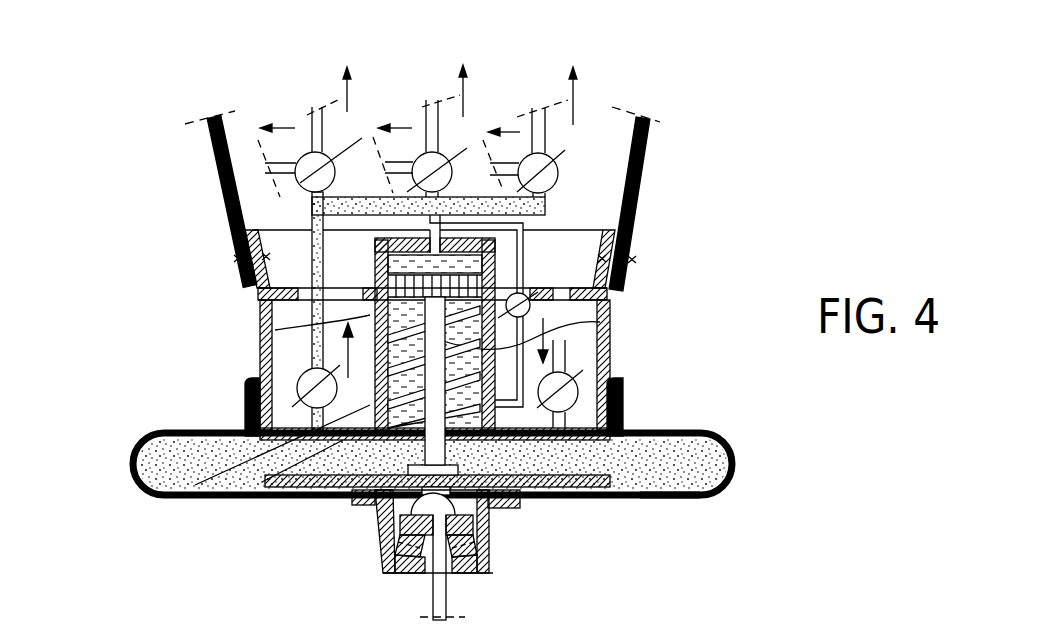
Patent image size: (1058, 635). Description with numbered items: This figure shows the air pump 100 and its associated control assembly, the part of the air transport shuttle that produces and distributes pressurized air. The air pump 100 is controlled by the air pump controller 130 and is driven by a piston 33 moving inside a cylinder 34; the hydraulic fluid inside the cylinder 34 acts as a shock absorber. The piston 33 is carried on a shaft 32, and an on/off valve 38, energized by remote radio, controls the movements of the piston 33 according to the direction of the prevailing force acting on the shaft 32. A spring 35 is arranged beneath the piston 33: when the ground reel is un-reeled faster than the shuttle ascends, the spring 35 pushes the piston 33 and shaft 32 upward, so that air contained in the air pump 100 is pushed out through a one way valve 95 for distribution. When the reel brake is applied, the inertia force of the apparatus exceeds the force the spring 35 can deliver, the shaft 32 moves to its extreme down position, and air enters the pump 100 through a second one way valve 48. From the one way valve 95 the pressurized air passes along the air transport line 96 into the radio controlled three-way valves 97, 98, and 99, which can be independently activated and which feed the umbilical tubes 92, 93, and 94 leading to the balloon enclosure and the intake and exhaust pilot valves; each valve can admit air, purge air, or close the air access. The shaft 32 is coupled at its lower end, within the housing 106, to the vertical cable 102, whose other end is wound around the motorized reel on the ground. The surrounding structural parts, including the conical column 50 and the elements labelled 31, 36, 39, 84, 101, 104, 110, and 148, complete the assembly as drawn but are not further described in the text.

The base plate 31 is at (312, 497).
The shaft 32 is at (237, 497).
The piston 33 is at (373, 305).
The cylinder 34 is at (543, 237).
The spring 35 is at (176, 495).
The lower housing 36 is at (610, 310).
The on/off valve 38 is at (612, 345).
The bypass tube 39 is at (523, 258).
The one way valve 48 is at (623, 398).
The conical column 50 is at (247, 405).
The side plates 84 is at (213, 165).
The umbilical tube 92 is at (550, 143).
The umbilical tube 93 is at (430, 127).
The umbilical tube 94 is at (297, 115).
The one way valve 95 is at (295, 375).
The air transport line 96 is at (257, 247).
The radio controlled 3-way valve 97 is at (547, 195).
The radio controlled 3-way valve 98 is at (455, 156).
The radio controlled 3-way valve 99 is at (343, 155).
The air pump 100 is at (733, 467).
The pad skin 101 is at (702, 500).
The vertical cable 102 is at (447, 597).
The mounting flange 104 is at (490, 510).
The housing 106 is at (383, 563).
The ball seat 110 is at (430, 507).
The air pump controller 130 is at (503, 225).
The bypass valve 148 is at (610, 288).